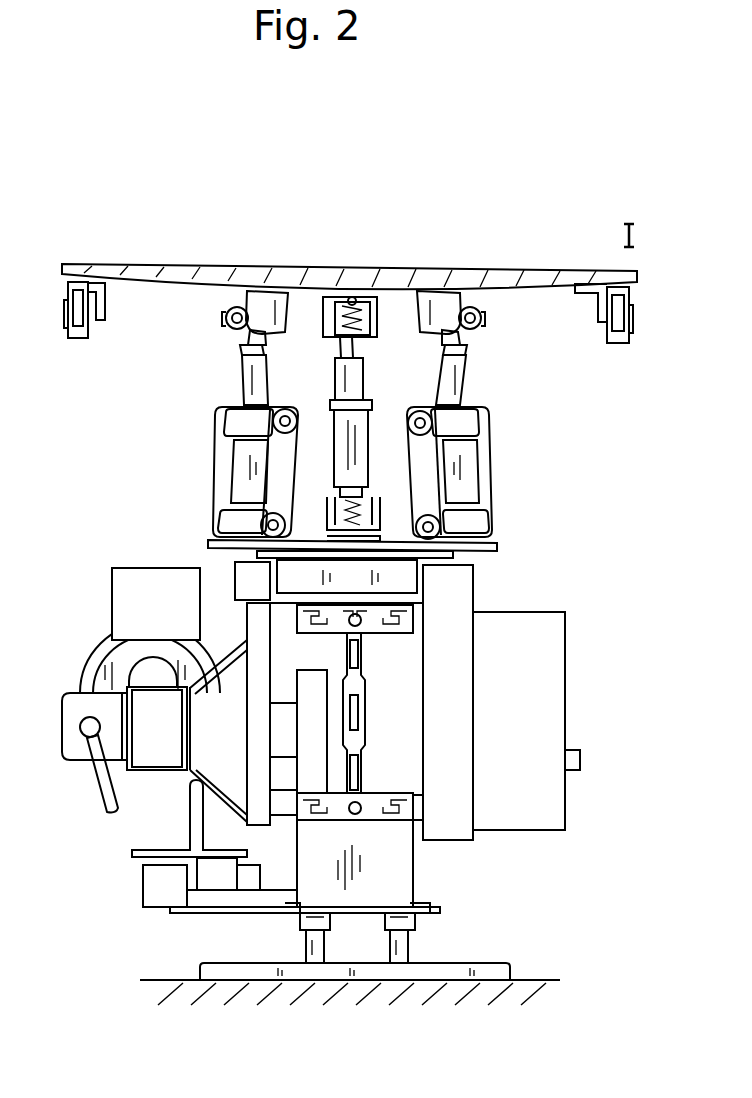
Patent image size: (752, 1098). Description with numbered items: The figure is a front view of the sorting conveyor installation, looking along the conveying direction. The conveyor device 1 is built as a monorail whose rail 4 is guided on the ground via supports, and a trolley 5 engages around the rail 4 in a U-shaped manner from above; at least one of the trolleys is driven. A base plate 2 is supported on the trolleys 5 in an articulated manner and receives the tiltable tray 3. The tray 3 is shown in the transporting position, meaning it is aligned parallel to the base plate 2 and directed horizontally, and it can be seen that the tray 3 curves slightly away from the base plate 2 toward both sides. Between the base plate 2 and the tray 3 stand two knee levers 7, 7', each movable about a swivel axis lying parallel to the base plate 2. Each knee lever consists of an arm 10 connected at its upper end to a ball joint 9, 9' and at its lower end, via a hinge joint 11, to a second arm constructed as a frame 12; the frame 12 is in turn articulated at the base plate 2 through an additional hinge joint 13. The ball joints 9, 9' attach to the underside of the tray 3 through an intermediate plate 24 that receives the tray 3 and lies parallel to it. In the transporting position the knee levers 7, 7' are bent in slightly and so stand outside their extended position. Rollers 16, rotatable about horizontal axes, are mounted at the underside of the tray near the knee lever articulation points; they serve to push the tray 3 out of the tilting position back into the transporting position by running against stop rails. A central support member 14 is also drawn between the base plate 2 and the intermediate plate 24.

The conveyor device 1 is at (485, 894).
The base plate 2 is at (497, 547).
The tray 3 is at (523, 280).
The rail 4 is at (352, 657).
The trolley 5 is at (448, 737).
The knee lever 7 is at (179, 476).
The knee lever 7' is at (514, 473).
The ball joint 9 is at (215, 263).
The ball joint 9' is at (475, 263).
The arm 10 is at (267, 300).
The hinge joint 11 is at (224, 424).
The frame 12 is at (222, 492).
The hinge joint 13 is at (212, 532).
The central support cylinder 14 is at (342, 347).
The roller 16 is at (81, 296).
The intermediate plate 24 is at (373, 292).